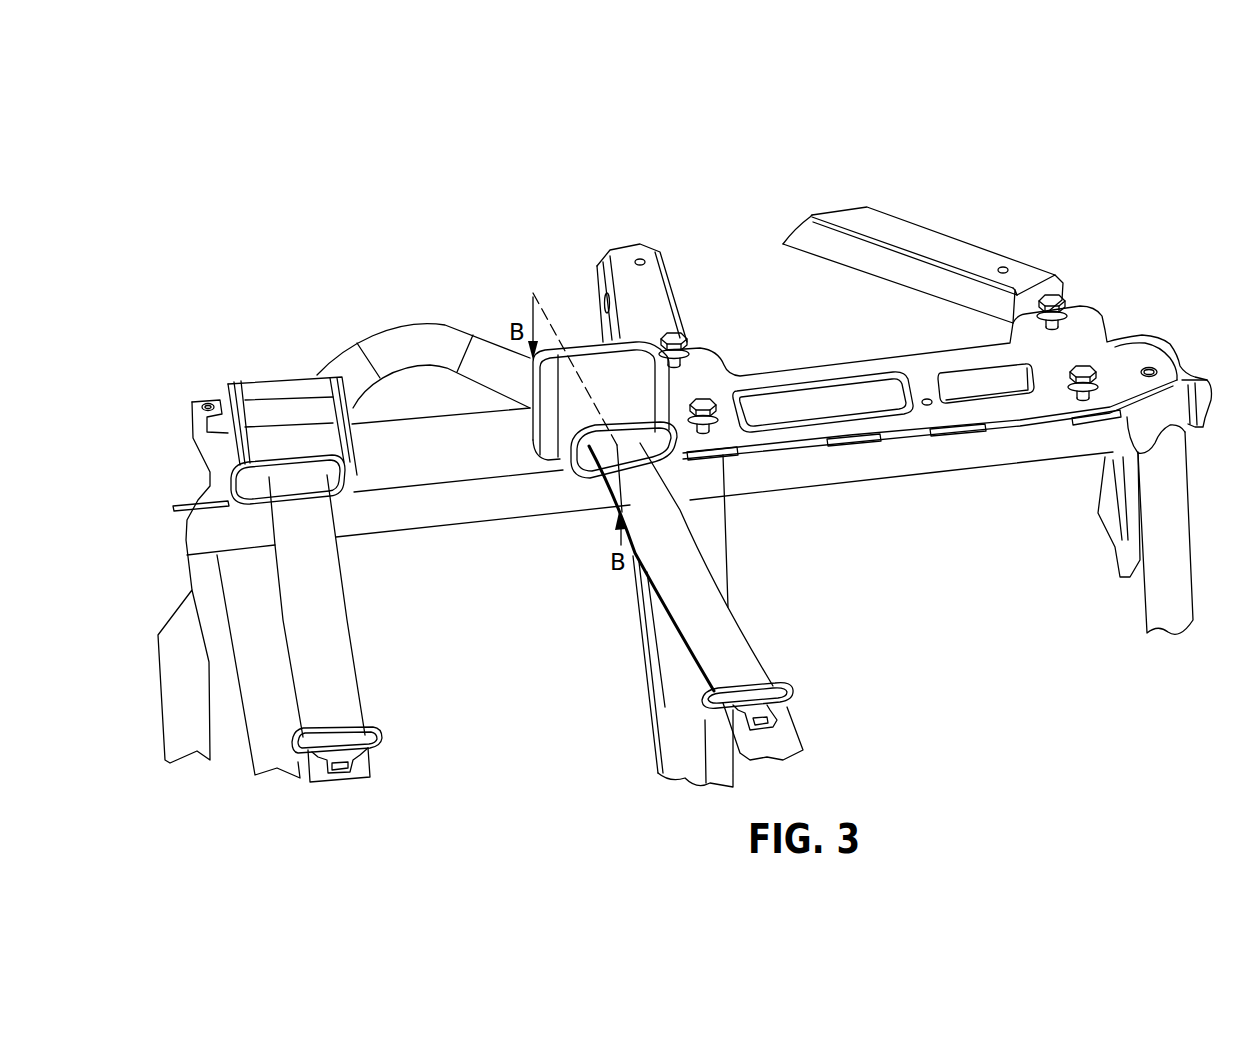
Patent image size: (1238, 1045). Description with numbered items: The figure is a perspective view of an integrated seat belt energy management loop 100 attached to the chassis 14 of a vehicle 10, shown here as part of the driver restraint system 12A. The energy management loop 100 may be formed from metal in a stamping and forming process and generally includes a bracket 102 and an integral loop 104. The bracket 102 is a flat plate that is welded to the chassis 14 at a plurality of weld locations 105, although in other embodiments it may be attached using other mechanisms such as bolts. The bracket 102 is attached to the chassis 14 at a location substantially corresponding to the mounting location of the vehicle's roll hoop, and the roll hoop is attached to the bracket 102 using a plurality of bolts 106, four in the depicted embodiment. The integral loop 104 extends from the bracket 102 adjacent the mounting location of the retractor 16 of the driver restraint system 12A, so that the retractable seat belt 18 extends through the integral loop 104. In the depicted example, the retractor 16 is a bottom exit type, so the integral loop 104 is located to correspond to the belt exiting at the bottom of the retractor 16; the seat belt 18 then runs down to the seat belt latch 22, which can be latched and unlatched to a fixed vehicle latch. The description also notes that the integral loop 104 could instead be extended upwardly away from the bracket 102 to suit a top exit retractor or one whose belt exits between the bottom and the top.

The vehicle 10 is at (853, 181).
The driver restraint system 12A is at (552, 396).
The chassis 14 is at (416, 552).
The retractor 16 is at (513, 427).
The retractable seat belt 18 is at (740, 617).
The seat belt latch 22 is at (812, 686).
The energy management loop 100 is at (935, 435).
The bracket 102 is at (816, 348).
The integral loop 104 is at (582, 496).
The weld locations 105 is at (712, 460).
The bolts 106 is at (1062, 298).